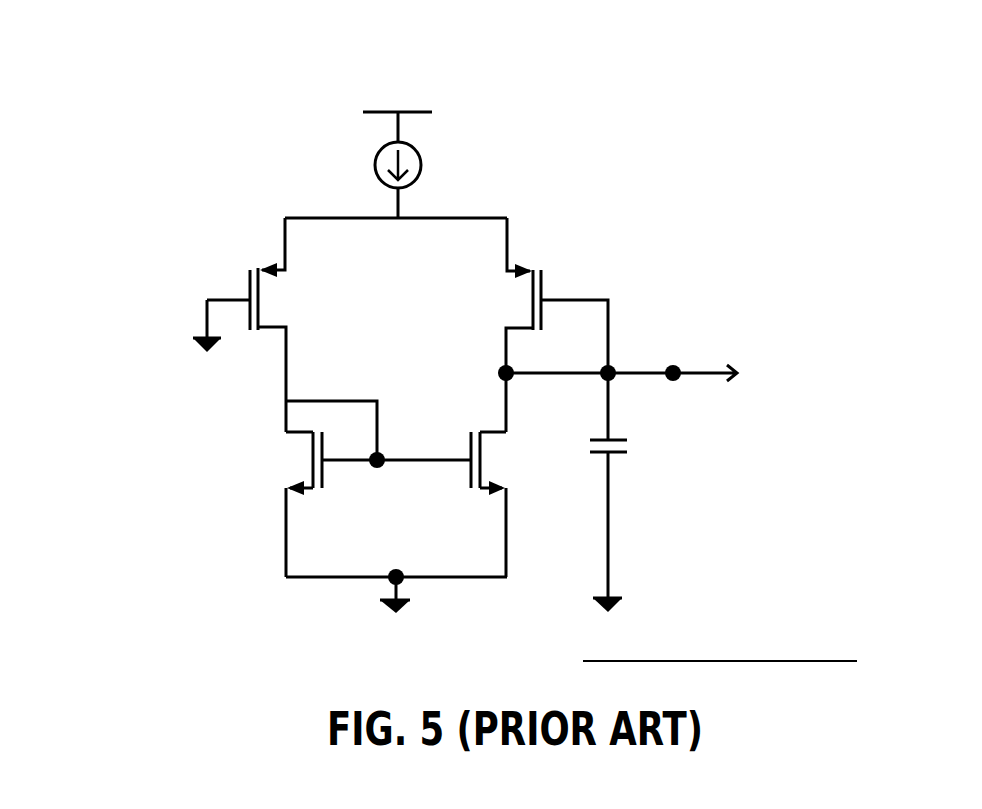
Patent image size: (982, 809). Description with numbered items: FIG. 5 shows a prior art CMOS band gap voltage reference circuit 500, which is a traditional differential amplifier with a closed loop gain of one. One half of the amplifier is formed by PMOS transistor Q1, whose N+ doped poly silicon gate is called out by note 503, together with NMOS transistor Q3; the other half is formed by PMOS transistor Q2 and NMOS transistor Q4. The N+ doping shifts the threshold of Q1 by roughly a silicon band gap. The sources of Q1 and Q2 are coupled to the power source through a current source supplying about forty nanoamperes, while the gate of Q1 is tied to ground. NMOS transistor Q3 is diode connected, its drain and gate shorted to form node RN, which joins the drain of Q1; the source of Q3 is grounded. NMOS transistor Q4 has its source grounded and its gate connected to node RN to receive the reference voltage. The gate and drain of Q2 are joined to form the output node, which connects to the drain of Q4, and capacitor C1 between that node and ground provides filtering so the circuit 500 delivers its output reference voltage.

The CMOS band gap voltage reference circuit 500 is at (142, 53).
The note 503 is at (228, 271).
The PMOS transistor Q1 is at (164, 315).
The PMOS transistor Q2 is at (552, 325).
The NMOS transistor Q3 is at (328, 504).
The NMOS transistor Q4 is at (450, 504).
The capacitor C1 is at (625, 492).
The node RN is at (398, 435).